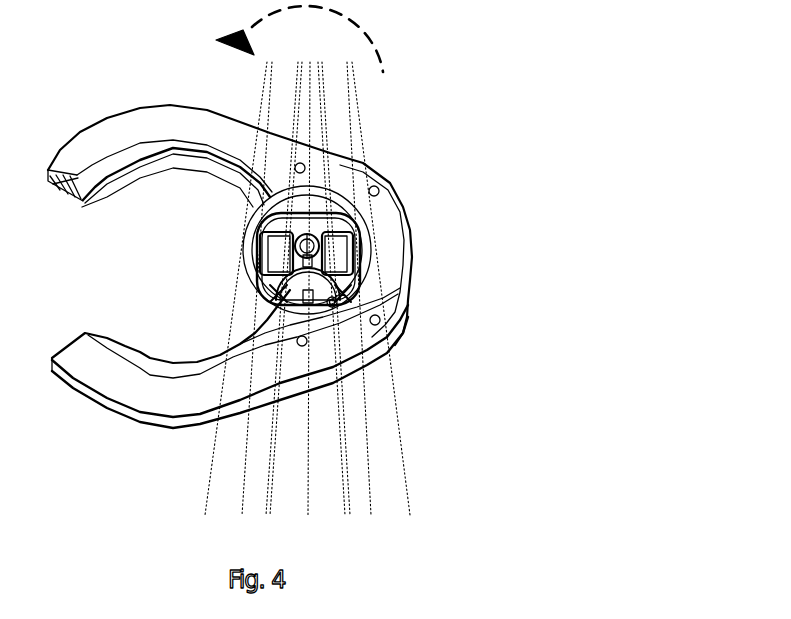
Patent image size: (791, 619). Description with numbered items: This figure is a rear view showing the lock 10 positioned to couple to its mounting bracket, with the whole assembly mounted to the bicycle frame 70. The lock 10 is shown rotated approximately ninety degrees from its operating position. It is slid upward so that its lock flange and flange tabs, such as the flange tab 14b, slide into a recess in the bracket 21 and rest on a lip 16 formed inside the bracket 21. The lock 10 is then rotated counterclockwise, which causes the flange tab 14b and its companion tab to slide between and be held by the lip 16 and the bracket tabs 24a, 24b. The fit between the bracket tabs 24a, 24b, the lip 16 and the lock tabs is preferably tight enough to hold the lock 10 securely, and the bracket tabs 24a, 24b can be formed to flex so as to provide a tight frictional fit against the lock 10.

The lock 10 is at (408, 165).
The flange tab 14b is at (300, 293).
The lip 16 is at (262, 248).
The bracket 21 is at (290, 214).
The bracket tab 24a is at (338, 250).
The bracket tab 24b is at (270, 243).
The bicycle frame 70 is at (212, 457).